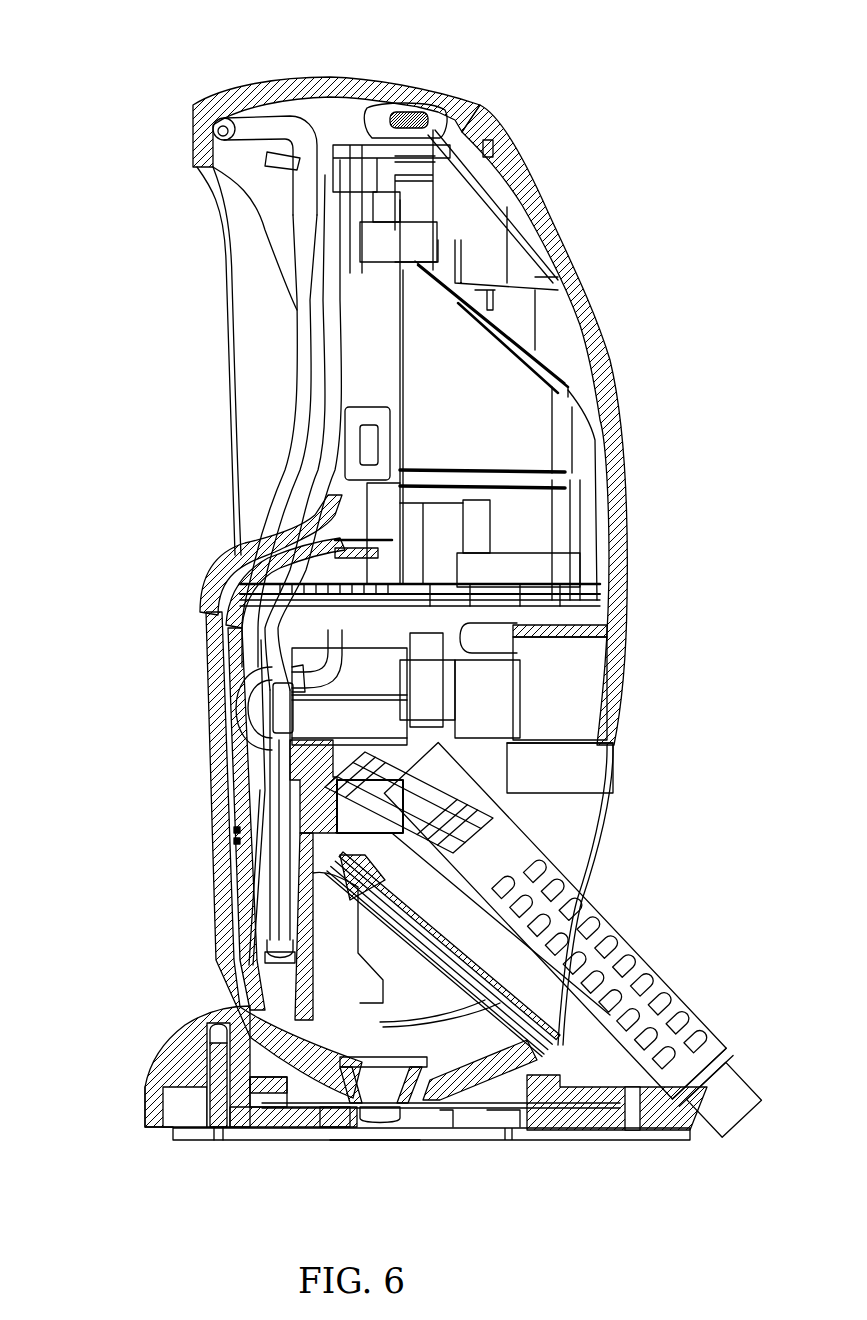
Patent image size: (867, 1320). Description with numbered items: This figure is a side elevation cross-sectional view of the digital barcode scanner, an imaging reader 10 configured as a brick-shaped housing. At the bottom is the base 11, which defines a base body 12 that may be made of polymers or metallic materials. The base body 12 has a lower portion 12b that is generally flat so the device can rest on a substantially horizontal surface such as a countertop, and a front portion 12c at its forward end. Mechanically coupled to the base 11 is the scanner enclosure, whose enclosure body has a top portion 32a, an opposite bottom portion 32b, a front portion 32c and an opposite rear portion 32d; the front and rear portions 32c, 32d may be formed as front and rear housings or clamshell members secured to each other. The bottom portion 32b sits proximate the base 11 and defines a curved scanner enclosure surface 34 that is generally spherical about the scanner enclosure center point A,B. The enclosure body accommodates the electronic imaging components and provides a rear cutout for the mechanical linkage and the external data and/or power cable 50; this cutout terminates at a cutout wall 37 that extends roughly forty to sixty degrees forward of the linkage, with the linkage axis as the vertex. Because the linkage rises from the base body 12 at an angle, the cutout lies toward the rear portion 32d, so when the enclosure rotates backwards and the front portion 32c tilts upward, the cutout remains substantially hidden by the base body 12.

The imaging reader 10 is at (702, 412).
The base 11 is at (147, 1088).
The base body 12 is at (177, 1037).
The lower portion of the base body 12b is at (370, 1153).
The front portion of the base body 12c is at (131, 1111).
The top portion of the enclosure body 32a is at (450, 63).
The bottom portion of the enclosure body 32b is at (420, 1066).
The front portion of the enclosure body 32c is at (172, 572).
The rear portion of the enclosure body 32d is at (629, 345).
The curved scanner enclosure surface 34 is at (221, 1128).
The cutout wall 37 is at (327, 1052).
The external data and/or power cable 50 is at (683, 1020).
The scanner enclosure center point A,B is at (392, 862).